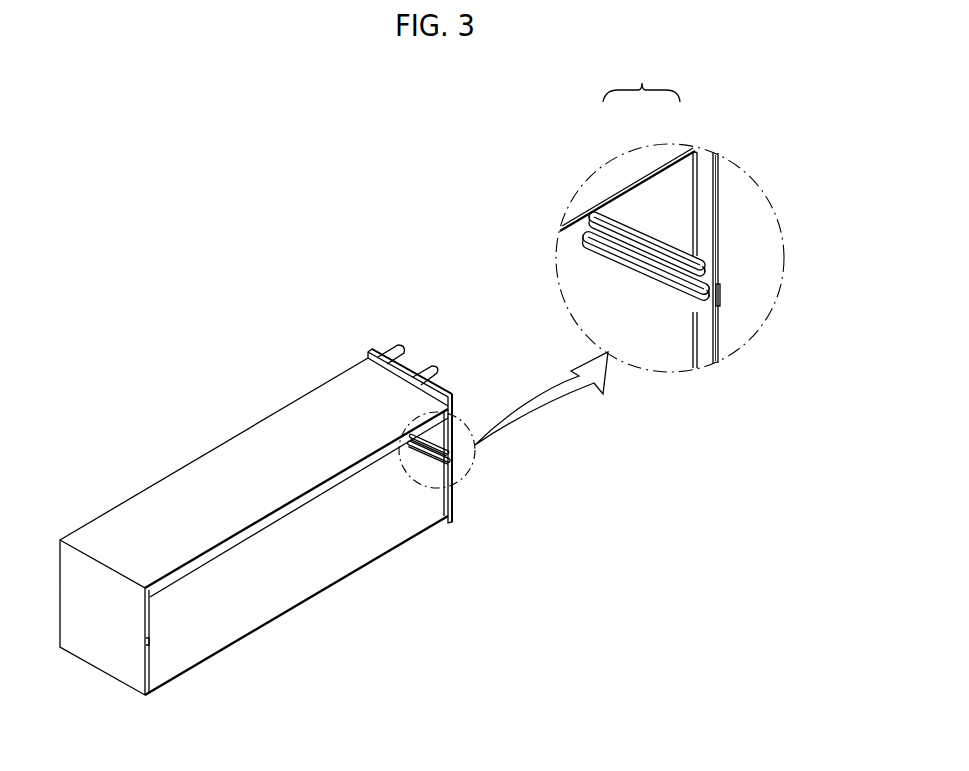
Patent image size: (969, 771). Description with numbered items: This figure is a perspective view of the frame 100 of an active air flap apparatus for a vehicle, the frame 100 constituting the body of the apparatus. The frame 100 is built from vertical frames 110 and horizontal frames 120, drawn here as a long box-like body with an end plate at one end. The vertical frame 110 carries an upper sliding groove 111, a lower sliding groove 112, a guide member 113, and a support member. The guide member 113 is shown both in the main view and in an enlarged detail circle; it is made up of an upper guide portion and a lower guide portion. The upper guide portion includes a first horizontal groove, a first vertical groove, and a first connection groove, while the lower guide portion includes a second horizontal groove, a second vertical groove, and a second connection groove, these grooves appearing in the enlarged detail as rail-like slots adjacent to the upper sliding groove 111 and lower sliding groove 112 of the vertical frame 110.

The frame 100 is at (204, 423).
The vertical frame 110 is at (120, 628).
The upper sliding groove 111 is at (713, 300).
The lower sliding groove 112 is at (716, 320).
The guide member 113 is at (441, 462).
The horizontal frame 120 is at (322, 457).